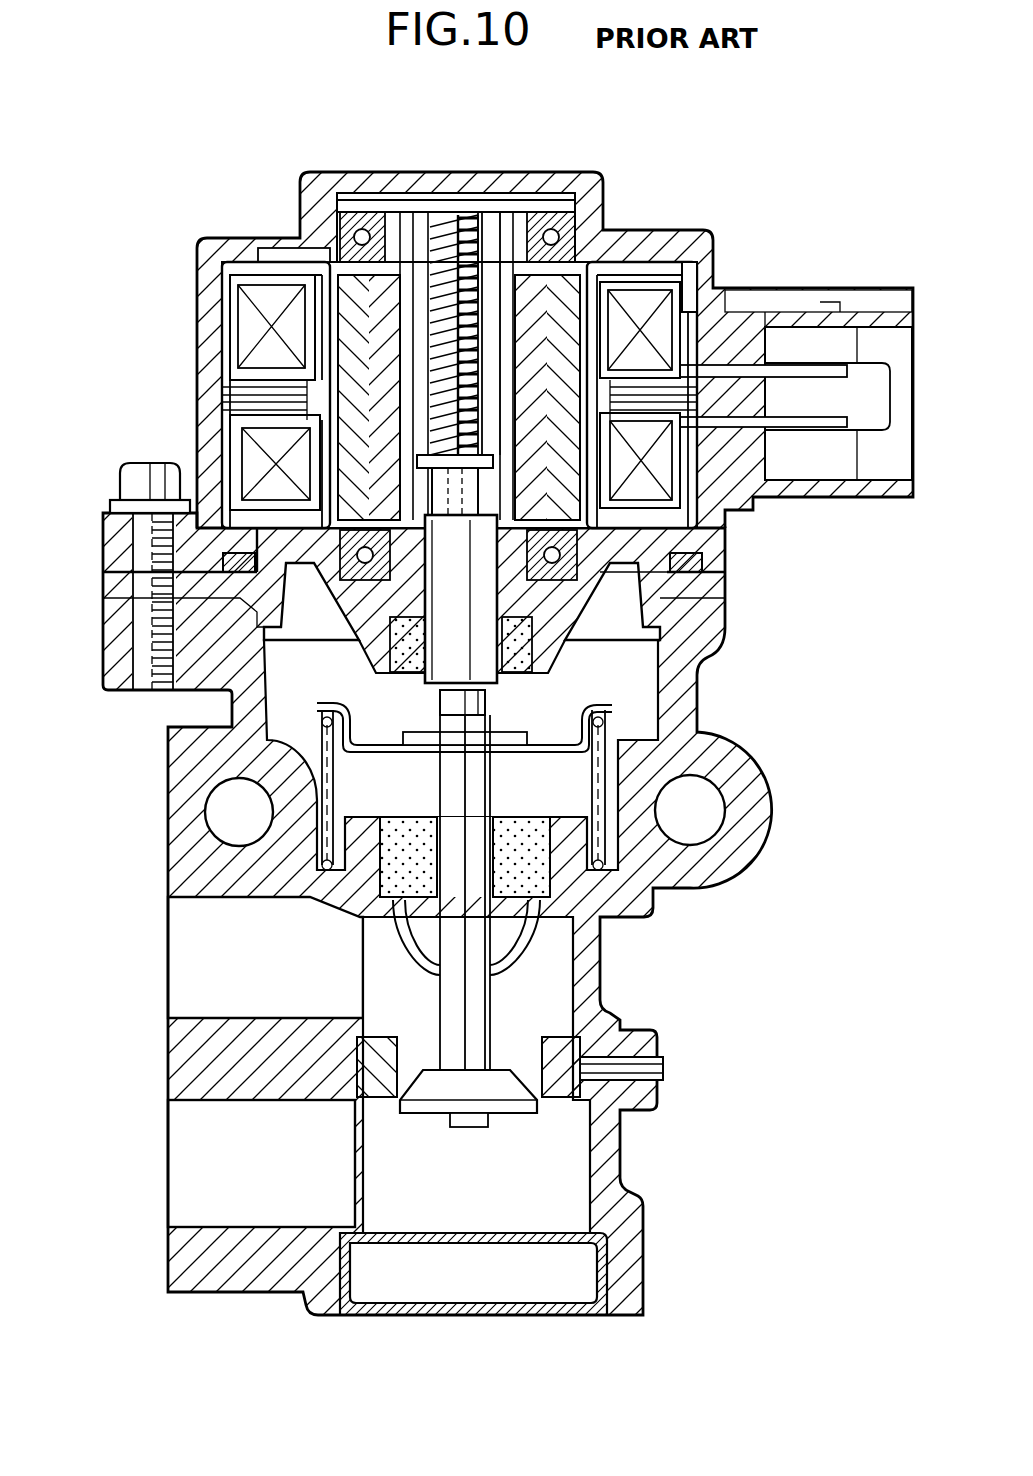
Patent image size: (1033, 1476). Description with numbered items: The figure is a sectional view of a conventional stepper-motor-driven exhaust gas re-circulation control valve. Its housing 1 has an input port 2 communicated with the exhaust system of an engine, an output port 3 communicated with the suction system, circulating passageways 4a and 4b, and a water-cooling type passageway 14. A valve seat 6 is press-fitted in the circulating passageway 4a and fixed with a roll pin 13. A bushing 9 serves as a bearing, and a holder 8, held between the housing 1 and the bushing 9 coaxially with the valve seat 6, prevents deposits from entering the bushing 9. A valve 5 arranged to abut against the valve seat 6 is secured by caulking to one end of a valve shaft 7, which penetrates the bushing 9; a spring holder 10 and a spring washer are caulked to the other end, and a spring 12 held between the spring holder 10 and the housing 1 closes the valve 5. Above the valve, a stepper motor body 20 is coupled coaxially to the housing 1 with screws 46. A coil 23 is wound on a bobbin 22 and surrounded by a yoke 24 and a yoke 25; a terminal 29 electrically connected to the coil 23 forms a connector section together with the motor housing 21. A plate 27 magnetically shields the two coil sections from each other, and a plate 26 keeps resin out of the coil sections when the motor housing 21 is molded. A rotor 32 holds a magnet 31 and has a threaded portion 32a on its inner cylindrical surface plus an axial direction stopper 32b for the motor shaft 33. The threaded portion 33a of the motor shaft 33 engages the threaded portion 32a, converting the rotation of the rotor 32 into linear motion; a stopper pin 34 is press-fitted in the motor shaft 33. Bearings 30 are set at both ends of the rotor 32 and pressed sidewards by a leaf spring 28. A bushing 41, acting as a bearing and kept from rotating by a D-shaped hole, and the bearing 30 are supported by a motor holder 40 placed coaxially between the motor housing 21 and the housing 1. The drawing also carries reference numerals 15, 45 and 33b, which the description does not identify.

The housing 1 is at (712, 882).
The input port 2 is at (178, 1163).
The output port 3 is at (170, 952).
The circulating passageway 4a is at (580, 1155).
The circulating passageway 4b is at (378, 993).
The valve 5 is at (508, 1115).
The valve seat 6 is at (620, 1030).
The valve shaft 7 is at (490, 995).
The holder 8 is at (395, 920).
The bushing 9 is at (510, 830).
The spring holder 10 is at (322, 705).
The spring 12 is at (335, 785).
The roll pin 13 is at (535, 747).
The water-cooling type passageway 14 is at (705, 808).
The cup cover 15 is at (600, 1275).
The stepper motor body 20 is at (122, 235).
The motor housing 21 is at (605, 193).
The bobbin 22 is at (650, 298).
The coil 23 is at (718, 280).
The yoke 24 is at (232, 267).
The yoke 25 is at (225, 377).
The plate 26 is at (280, 257).
The plate 27 is at (210, 410).
The leaf spring 28 is at (362, 212).
The terminal 29 is at (847, 370).
The bearings 30 is at (332, 200).
The magnet 31 is at (383, 280).
The rotor 32 is at (520, 205).
The threaded portion 32a is at (500, 300).
The axial direction stopper 32b is at (497, 695).
The motor shaft 33 is at (446, 212).
The threaded portion 33a is at (488, 295).
The spring lower end 33b is at (440, 676).
The stopper pin 34 is at (498, 483).
The motor holder 40 is at (742, 600).
The bushing 41 is at (535, 665).
The bolt 45 is at (130, 546).
The screws 46 is at (130, 462).